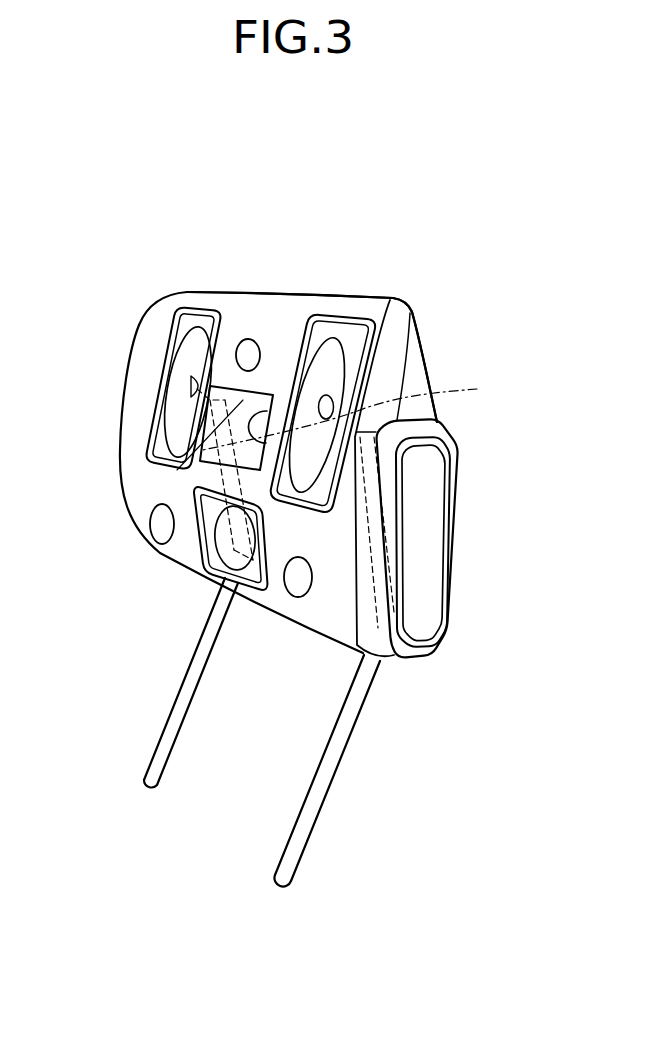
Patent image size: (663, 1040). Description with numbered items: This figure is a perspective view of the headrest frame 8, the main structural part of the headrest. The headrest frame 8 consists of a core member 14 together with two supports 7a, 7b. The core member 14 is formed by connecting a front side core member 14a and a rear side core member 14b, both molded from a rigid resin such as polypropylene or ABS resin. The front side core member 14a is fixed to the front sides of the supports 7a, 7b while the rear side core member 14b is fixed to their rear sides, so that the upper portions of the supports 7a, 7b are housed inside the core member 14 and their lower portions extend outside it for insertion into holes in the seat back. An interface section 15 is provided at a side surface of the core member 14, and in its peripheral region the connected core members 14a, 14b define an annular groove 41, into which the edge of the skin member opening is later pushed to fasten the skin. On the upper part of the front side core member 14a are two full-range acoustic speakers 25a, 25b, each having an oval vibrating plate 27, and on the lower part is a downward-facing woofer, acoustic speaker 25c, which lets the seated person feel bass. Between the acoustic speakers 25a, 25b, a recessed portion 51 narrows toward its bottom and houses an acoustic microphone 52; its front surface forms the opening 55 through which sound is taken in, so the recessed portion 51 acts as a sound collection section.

The headrest frame 8 is at (530, 272).
The core member 14 is at (534, 152).
The front side core member 14a is at (247, 294).
The rear side core member 14b is at (418, 368).
The interface section 15 is at (430, 538).
The annular groove 41 is at (446, 510).
The acoustic speaker 25a is at (323, 337).
The acoustic speaker 25b is at (183, 329).
The acoustic speaker 25c is at (222, 538).
The vibrating plate 27 is at (188, 367).
The recessed portion 51 is at (207, 437).
The acoustic microphone 52 is at (354, 415).
The opening 55 is at (225, 443).
The support 7a is at (170, 719).
The support 7b is at (313, 782).